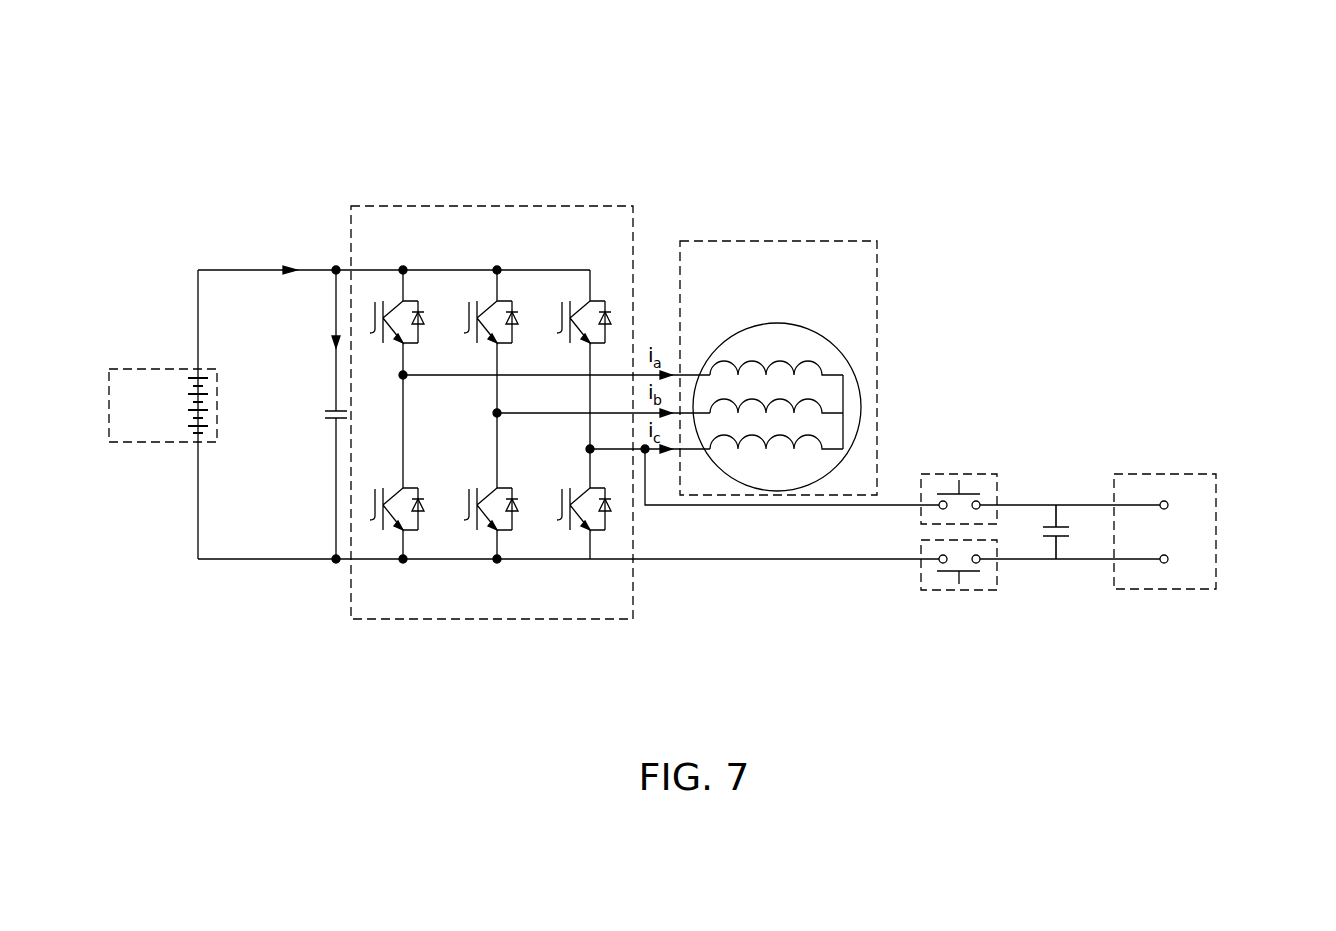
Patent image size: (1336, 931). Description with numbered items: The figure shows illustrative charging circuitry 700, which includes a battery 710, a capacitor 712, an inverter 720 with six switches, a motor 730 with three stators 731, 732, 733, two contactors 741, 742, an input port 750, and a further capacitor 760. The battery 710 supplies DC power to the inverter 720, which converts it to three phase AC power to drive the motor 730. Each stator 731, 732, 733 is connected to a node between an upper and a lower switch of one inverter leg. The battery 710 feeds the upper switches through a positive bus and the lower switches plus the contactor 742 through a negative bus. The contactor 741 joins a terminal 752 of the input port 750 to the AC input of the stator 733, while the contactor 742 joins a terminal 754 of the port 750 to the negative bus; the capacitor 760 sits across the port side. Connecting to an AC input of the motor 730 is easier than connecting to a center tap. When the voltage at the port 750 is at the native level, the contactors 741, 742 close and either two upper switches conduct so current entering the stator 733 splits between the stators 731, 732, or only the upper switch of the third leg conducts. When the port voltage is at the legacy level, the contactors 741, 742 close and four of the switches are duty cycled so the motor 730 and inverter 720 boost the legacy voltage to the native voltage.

The circuitry 700 is at (180, 115).
The battery 710 is at (140, 368).
The capacitor 712 is at (333, 419).
The inverter 720 is at (486, 206).
The motor 730 is at (818, 333).
The stator 731 is at (787, 362).
The stator 732 is at (818, 400).
The stator 733 is at (818, 437).
The contactor 741 is at (967, 474).
The contactor 742 is at (967, 590).
The input port 750 is at (1207, 531).
The terminal 752 is at (1165, 500).
The terminal 754 is at (1165, 565).
The capacitor 760 is at (1060, 537).